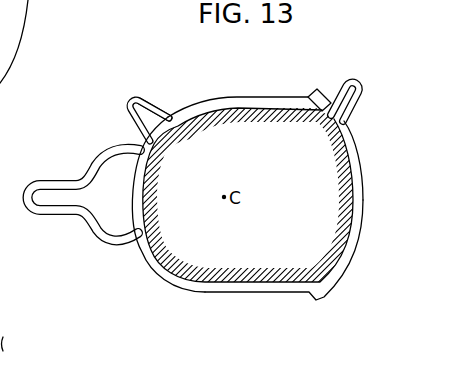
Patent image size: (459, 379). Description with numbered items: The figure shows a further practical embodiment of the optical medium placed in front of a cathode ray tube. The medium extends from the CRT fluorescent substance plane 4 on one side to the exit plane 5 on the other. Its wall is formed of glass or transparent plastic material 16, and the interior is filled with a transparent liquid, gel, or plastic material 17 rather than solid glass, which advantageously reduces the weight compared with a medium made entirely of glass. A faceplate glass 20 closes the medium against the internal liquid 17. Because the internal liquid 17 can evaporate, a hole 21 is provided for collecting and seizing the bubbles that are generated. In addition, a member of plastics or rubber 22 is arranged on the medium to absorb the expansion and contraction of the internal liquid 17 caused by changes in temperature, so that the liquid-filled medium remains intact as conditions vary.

The CRT fluorescent substance plane 4 is at (137, 194).
The exit plane 5 is at (357, 158).
The glass or transparent plastic material 16 is at (341, 266).
The transparent liquid, gel, or plastic material 17 is at (262, 137).
The faceplate glass 20 is at (217, 107).
The hole 21 is at (148, 118).
The plastics or rubber 22 is at (135, 97).